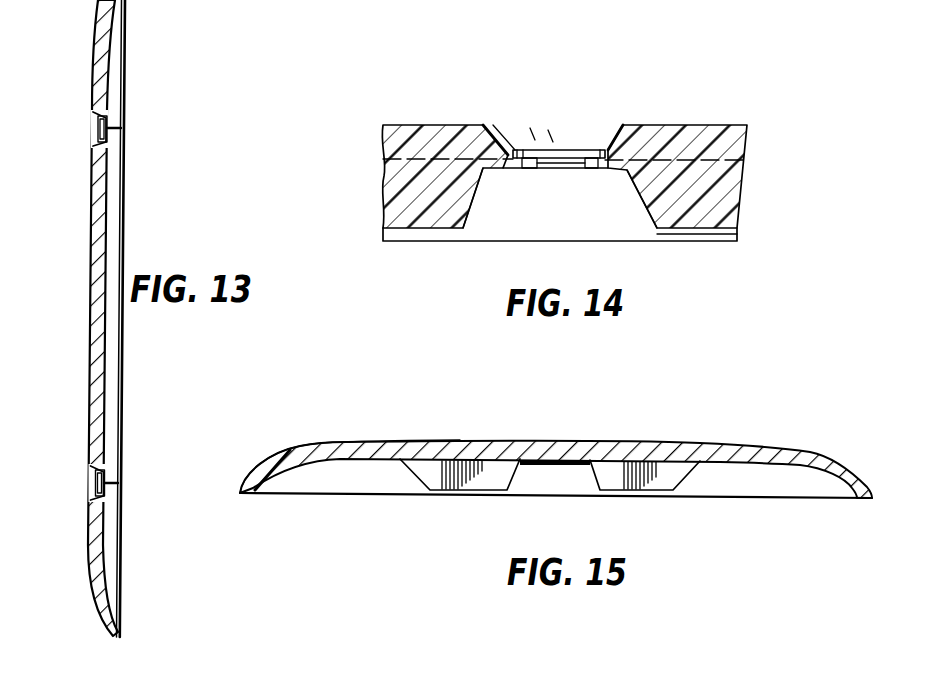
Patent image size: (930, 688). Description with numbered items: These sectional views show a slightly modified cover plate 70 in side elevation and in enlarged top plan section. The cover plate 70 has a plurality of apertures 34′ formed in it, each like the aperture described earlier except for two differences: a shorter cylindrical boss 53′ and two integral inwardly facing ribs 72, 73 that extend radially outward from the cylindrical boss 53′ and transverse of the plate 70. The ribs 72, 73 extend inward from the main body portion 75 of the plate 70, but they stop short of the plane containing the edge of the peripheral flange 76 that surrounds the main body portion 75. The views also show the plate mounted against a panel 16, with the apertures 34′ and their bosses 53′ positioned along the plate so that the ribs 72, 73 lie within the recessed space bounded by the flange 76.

In FIG. 13, the mounting panel 16 is at (92, 31).
In FIG. 13, the aperture 34′ is at (86, 123).
In FIG. 14, the aperture 34′ is at (616, 120).
In FIG. 14, the cylindrical boss 53′ is at (625, 170).
In FIG. 15, the cylindrical boss 53′ is at (560, 466).
In FIG. 14, the cover plate 70 is at (720, 124).
In FIG. 15, the cover plate 70 is at (786, 443).
In FIG. 14, the rib 72 is at (465, 230).
In FIG. 15, the rib 72 is at (457, 491).
In FIG. 13, the rib 73 is at (121, 128).
In FIG. 14, the rib 73 is at (657, 234).
In FIG. 15, the rib 73 is at (628, 491).
In FIG. 15, the main body portion 75 is at (363, 447).
In FIG. 15, the peripheral flange 76 is at (250, 494).